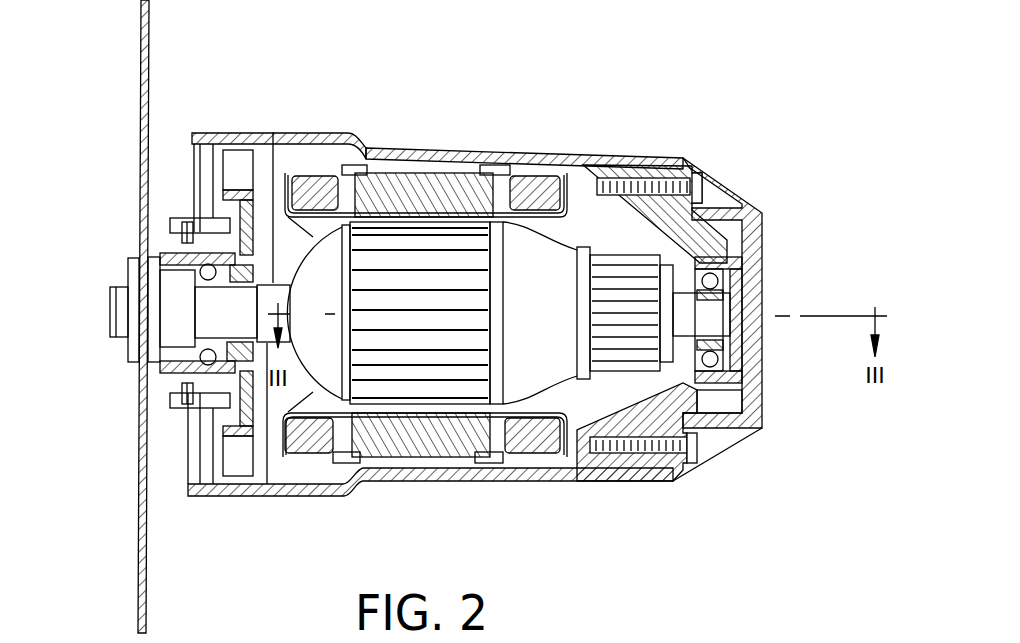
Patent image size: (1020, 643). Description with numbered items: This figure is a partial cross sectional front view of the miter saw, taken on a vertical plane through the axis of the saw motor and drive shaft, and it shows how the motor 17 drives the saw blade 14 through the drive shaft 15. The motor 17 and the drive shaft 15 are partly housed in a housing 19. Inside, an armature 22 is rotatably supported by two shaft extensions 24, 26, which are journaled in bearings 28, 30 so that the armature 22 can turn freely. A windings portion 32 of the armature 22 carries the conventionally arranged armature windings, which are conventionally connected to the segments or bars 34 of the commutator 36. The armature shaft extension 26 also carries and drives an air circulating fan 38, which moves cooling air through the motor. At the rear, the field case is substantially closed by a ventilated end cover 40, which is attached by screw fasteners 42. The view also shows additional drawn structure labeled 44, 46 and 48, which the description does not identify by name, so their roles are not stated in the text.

The saw blade 14 is at (150, 41).
The drive shaft 15 is at (202, 316).
The motor 17 is at (562, 509).
The housing 19 is at (408, 148).
The armature 22 is at (571, 231).
The shaft extension 24 is at (705, 268).
The shaft extension 26 is at (279, 283).
The bearing 28 is at (716, 282).
The bearing 30 is at (200, 349).
The windings portion 32 is at (570, 402).
The segments or bars 34 is at (722, 400).
The commutator 36 is at (641, 408).
The air circulating fan 38 is at (222, 172).
The ventilated end cover 40 is at (762, 262).
The screw fasteners 42 is at (702, 192).
The stator 44 is at (420, 478).
The housing joint 46 is at (585, 149).
The housing end portion 48 is at (315, 138).